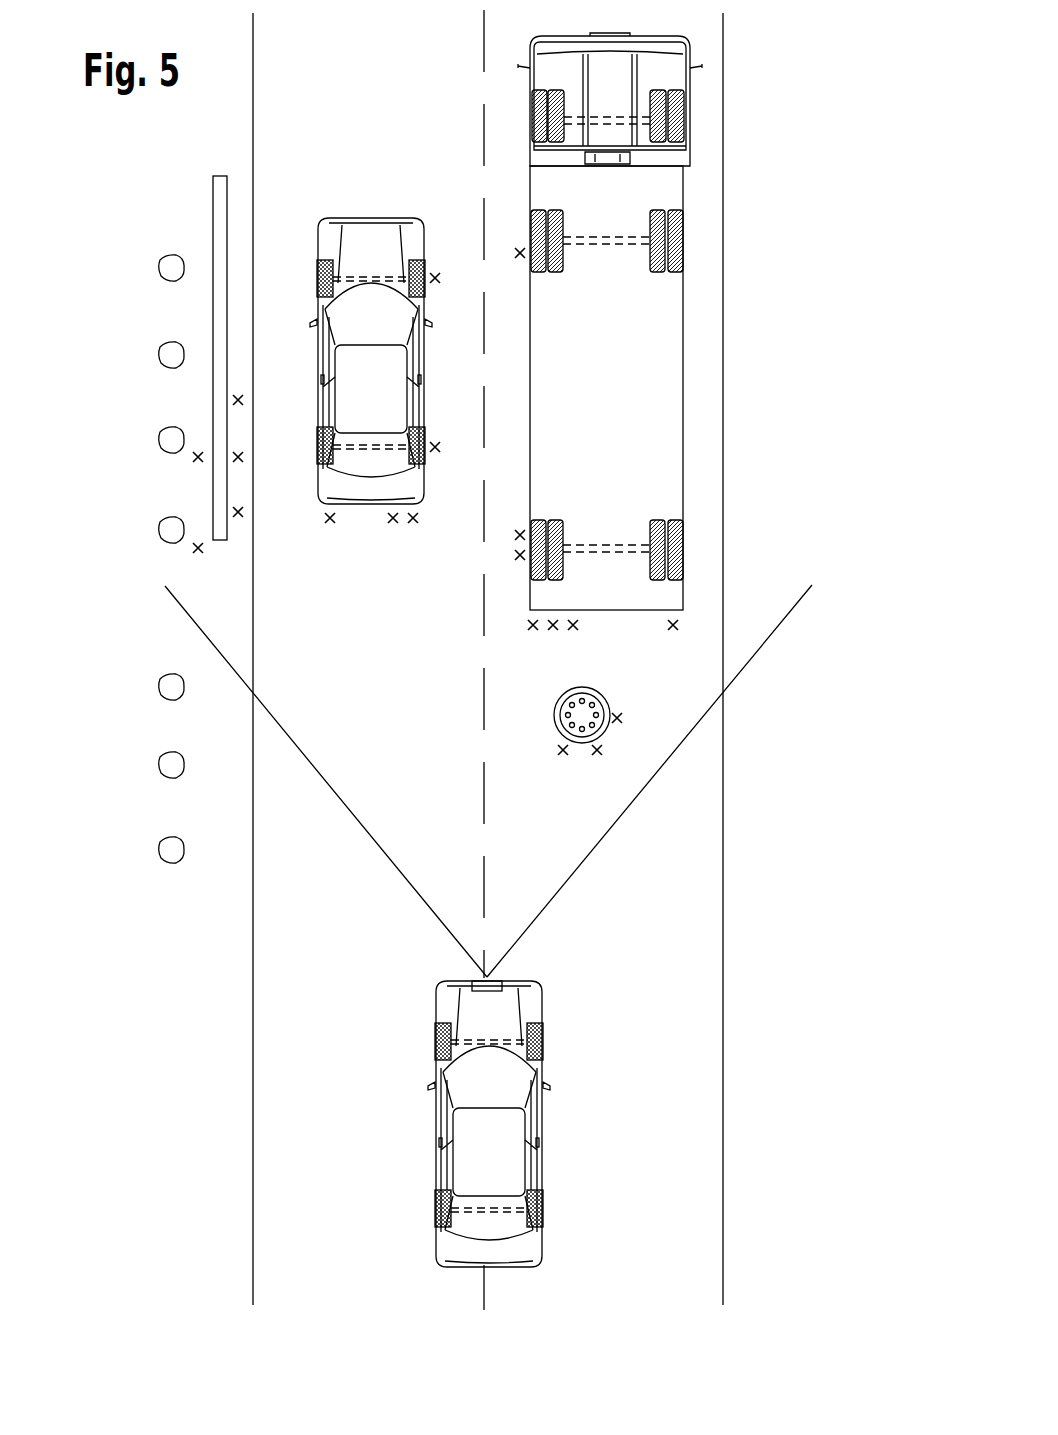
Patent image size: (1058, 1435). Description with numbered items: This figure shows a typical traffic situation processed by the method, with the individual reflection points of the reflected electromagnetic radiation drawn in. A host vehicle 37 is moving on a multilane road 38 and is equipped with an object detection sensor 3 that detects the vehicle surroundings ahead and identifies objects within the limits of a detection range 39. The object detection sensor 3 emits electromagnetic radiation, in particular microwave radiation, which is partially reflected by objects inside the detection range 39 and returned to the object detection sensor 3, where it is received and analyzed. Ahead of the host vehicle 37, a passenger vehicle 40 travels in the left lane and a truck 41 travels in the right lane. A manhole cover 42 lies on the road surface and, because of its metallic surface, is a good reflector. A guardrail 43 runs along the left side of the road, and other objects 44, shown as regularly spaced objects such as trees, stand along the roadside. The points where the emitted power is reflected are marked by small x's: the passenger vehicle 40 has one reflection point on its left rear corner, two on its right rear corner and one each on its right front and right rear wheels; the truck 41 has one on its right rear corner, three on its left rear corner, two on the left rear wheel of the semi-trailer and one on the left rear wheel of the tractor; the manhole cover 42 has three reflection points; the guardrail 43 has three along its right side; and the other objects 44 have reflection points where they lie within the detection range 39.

The object detection sensor 3 is at (500, 985).
The host vehicle 37 is at (532, 1160).
The multilane road 38 is at (723, 407).
The detection range 39 is at (388, 858).
The passenger vehicle 40 is at (381, 234).
The truck 41 is at (668, 303).
The manhole cover 42 is at (590, 706).
The guardrail 43 is at (218, 194).
The other objects 44 is at (162, 266).